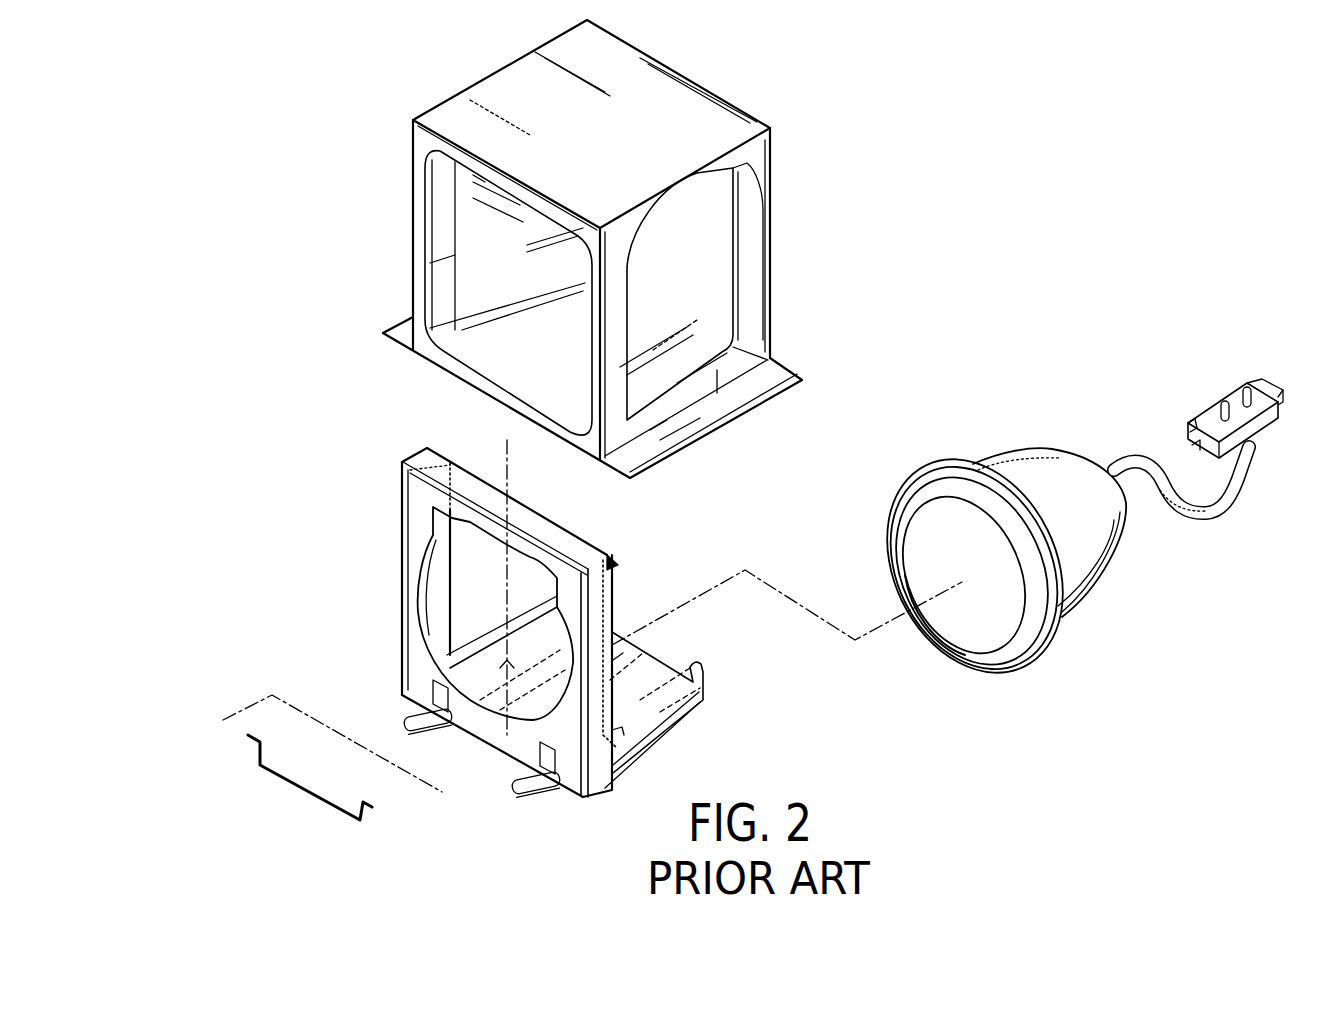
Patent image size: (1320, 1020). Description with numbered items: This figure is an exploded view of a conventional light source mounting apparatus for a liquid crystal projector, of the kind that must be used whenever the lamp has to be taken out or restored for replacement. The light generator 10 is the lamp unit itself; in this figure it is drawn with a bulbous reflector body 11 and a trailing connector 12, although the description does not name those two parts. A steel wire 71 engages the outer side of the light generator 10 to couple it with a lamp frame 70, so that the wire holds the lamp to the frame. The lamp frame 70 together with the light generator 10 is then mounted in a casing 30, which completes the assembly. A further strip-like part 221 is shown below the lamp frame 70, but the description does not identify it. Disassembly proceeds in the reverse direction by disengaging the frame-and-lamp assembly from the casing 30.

The light generator 10 is at (1068, 521).
The lamp reflector body 11 is at (1060, 455).
The connector 12 is at (1223, 520).
The casing 30 is at (492, 100).
The lamp frame 70 is at (400, 580).
The steel wire 71 is at (608, 562).
The retaining strip 221 is at (270, 775).